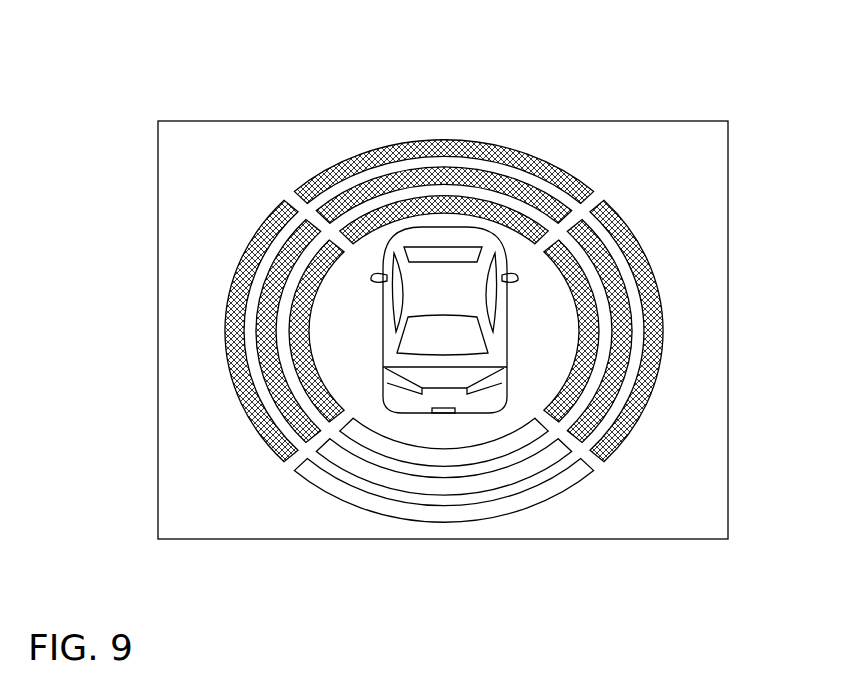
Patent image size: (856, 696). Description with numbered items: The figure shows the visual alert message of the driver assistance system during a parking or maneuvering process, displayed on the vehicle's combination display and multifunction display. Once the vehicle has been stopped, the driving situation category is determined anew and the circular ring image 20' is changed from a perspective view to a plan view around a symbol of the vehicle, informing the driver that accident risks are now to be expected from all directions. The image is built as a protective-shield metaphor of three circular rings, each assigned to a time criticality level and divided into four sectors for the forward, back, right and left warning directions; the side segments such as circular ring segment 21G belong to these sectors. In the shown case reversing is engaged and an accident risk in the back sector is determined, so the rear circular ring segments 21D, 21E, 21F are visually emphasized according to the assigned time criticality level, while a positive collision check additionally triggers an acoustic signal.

The circular ring image 20' is at (434, 374).
The circular ring segment 21G is at (238, 378).
The circular ring segment 21D is at (405, 510).
The circular ring segment 21E is at (453, 485).
The circular ring segment 21F is at (488, 465).